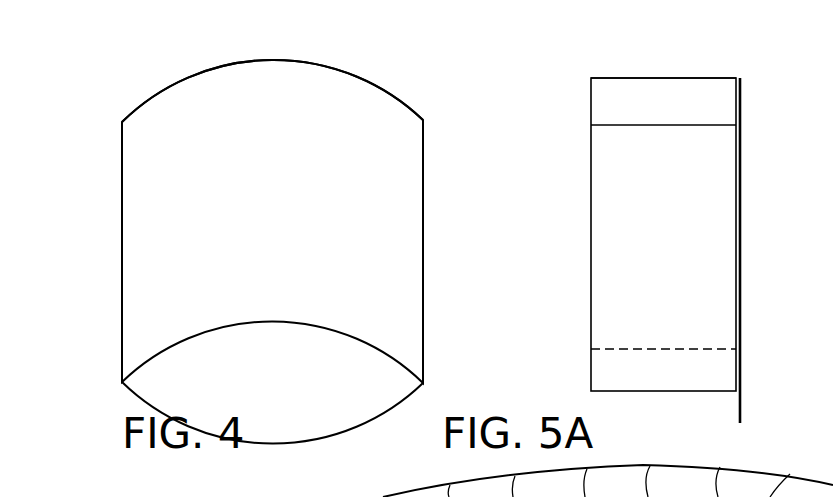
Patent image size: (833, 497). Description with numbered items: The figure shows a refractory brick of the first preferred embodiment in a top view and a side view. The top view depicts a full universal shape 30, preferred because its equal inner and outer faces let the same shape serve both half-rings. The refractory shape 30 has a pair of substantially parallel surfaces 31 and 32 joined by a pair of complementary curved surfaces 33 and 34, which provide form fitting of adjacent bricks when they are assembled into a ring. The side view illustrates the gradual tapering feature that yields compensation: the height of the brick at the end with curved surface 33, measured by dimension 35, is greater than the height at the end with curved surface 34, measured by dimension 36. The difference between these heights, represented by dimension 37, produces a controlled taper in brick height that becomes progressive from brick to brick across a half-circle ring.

In FIG. 4, the universal shape 30 is at (283, 205).
In FIG. 4, the parallel surface 31 is at (122, 215).
In FIG. 4, the parallel surface 32 is at (423, 228).
In FIG. 5A, the parallel surface 32 is at (607, 319).
In FIG. 4, the curved surface 33 is at (303, 62).
In FIG. 5A, the curved surface 33 is at (685, 78).
In FIG. 4, the curved surface 34 is at (215, 330).
In FIG. 5A, the dimension 35 is at (739, 48).
In FIG. 5A, the dimension 36 is at (736, 410).
In FIG. 5A, the dimension 37 is at (738, 413).